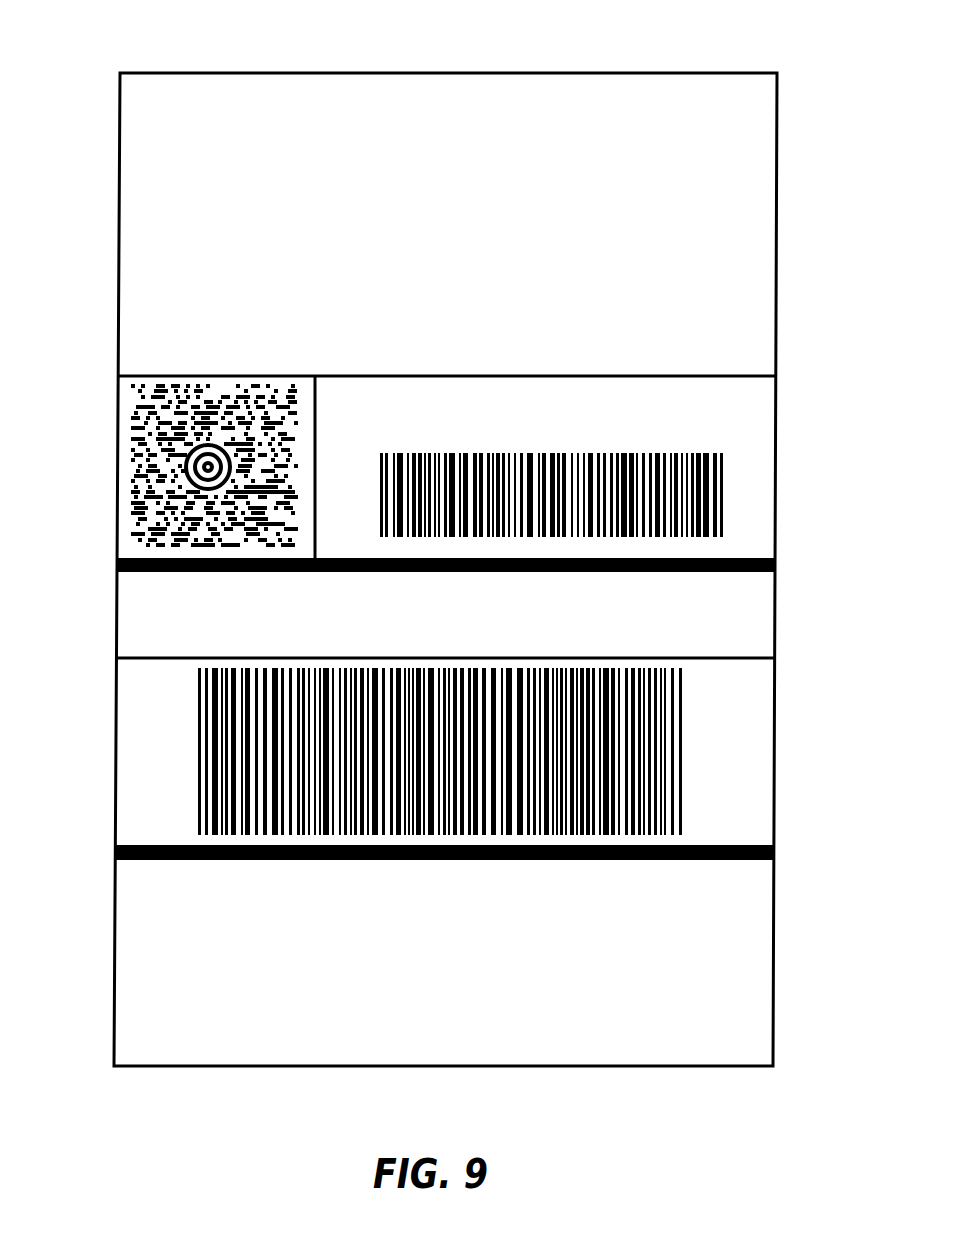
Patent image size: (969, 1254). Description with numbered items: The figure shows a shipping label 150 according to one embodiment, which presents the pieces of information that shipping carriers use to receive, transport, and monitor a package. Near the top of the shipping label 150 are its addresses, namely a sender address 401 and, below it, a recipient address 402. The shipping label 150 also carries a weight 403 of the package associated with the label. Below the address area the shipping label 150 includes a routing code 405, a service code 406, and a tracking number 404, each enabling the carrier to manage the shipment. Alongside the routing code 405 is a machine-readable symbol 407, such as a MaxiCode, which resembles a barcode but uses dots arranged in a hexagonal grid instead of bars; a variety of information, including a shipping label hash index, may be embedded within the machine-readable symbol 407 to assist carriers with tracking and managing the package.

The shipping label 150 is at (740, 73).
The sender address 401 is at (128, 107).
The recipient address 402 is at (198, 269).
The weight 403 is at (540, 102).
The tracking number 404 is at (127, 637).
The routing code 405 is at (740, 405).
The service code 406 is at (127, 597).
The machine-readable symbol 407 is at (128, 497).